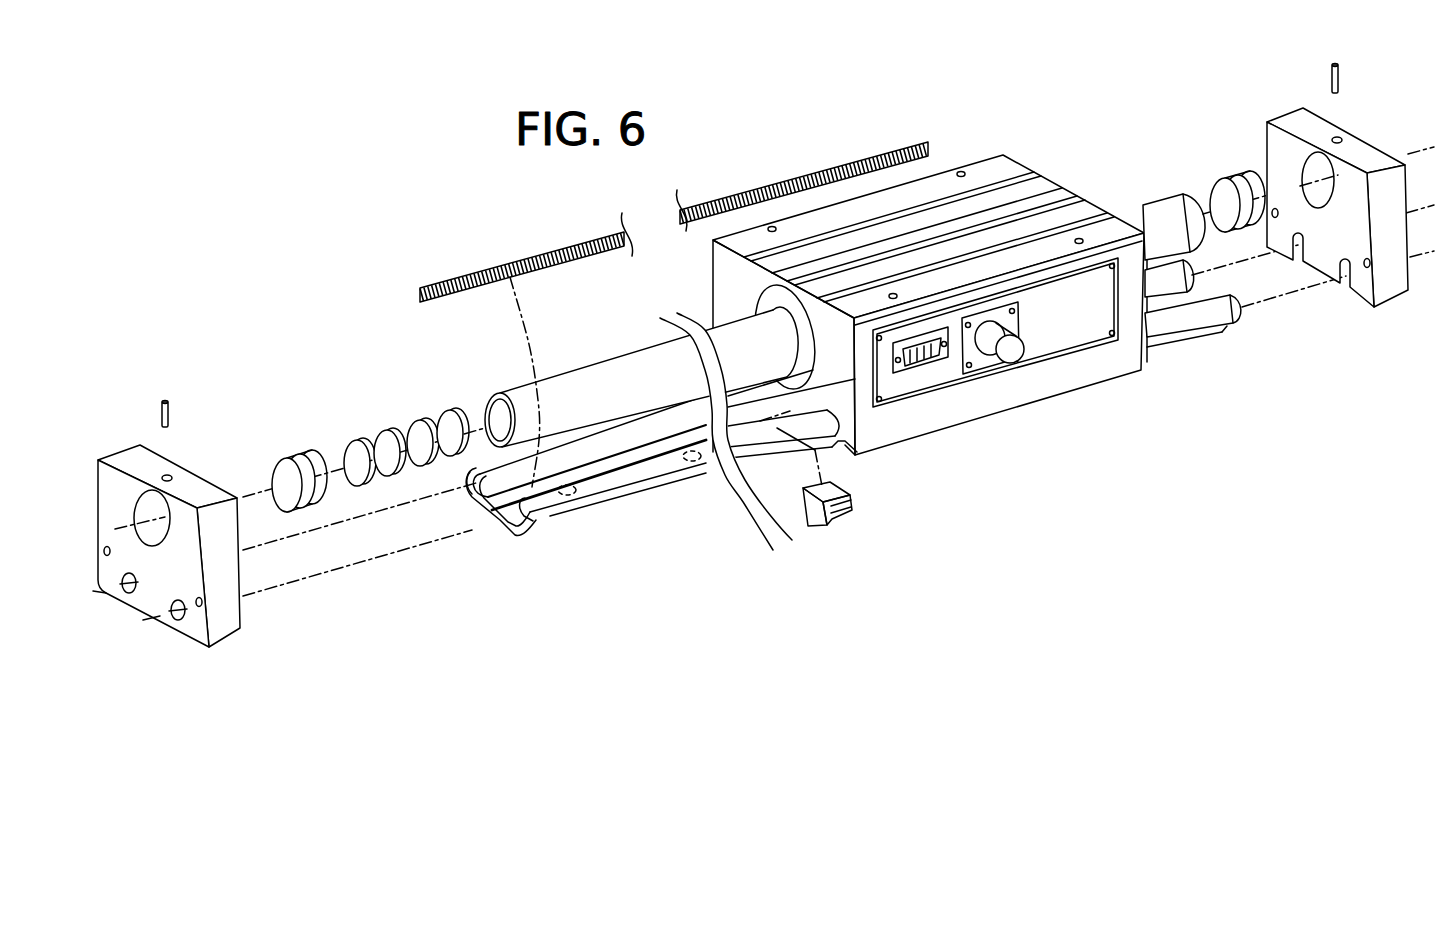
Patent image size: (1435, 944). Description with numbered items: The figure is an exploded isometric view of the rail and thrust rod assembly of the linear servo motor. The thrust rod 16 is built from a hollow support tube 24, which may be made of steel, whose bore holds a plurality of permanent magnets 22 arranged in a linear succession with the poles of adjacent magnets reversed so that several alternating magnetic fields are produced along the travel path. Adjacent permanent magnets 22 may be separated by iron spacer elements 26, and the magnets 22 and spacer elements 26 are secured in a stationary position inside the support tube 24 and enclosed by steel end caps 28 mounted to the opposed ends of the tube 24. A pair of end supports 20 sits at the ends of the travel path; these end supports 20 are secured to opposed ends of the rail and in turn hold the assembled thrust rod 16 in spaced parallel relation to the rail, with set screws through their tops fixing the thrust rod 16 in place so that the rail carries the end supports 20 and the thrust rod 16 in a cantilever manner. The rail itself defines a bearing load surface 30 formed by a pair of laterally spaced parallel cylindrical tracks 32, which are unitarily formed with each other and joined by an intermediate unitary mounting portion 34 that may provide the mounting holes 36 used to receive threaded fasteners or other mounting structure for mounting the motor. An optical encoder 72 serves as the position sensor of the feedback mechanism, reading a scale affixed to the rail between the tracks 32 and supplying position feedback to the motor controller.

The thrust rod 16 is at (560, 350).
The end supports 20 is at (120, 458).
The permanent magnets 22 is at (359, 441).
The hollow support tube 24 is at (598, 368).
The iron spacer elements 26 is at (392, 431).
The steel end caps 28 is at (299, 457).
The bearing load surface 30 is at (600, 488).
The cylindrical tracks 32 is at (473, 492).
The intermediate unitary mounting portion 34 is at (506, 522).
The mounting holes 36 is at (566, 496).
The optical encoder 72 is at (741, 194).